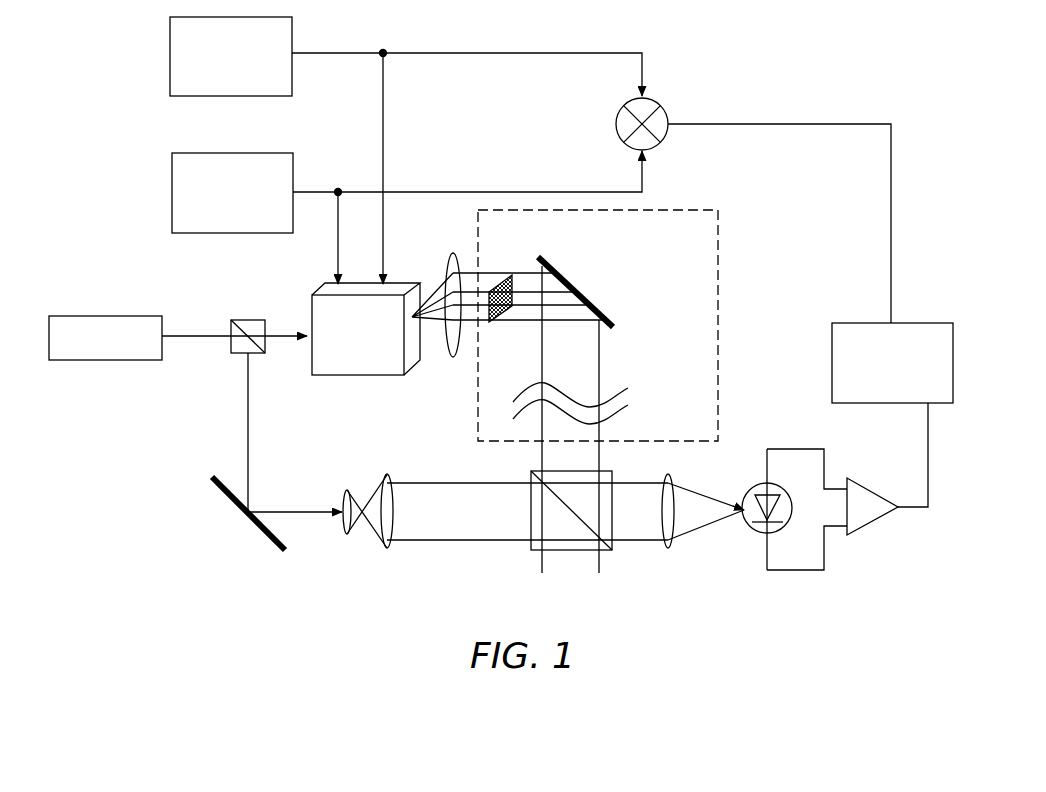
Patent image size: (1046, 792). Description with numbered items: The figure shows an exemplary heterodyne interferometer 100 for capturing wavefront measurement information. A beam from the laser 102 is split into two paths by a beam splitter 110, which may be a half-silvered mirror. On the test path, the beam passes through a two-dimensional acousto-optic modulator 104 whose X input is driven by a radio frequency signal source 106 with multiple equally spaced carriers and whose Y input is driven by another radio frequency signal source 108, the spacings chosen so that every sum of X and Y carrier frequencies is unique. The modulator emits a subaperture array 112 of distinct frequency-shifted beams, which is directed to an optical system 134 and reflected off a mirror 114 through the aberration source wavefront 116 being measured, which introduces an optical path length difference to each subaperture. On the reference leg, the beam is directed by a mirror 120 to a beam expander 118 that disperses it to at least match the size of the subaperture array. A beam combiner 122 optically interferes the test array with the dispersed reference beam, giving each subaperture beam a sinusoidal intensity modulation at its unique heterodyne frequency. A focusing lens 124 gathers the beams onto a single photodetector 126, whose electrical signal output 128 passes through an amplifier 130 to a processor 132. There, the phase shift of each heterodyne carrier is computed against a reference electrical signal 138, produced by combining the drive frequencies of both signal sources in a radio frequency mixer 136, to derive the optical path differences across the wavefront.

The heterodyne interferometer 100 is at (706, 32).
The laser 102 is at (138, 360).
The acousto-optic modulator 104 is at (361, 375).
The radio frequency signal source 106 is at (227, 96).
The radio frequency signal source 108 is at (233, 233).
The beam splitter 110 is at (247, 355).
The subaperture array 112 is at (519, 251).
The mirror 114 is at (581, 290).
The aberration source wavefront 116 is at (623, 374).
The beam expander 118 is at (371, 548).
The mirror 120 is at (246, 512).
The beam combiner 122 is at (575, 550).
The focusing lens 124 is at (673, 545).
The photodetector 126 is at (766, 486).
The electrical signal output 128 is at (928, 487).
The amplifier 130 is at (861, 534).
The processor 132 is at (867, 323).
The optical system 134 is at (702, 210).
The radio frequency mixer 136 is at (661, 105).
The reference electrical signal 138 is at (842, 123).